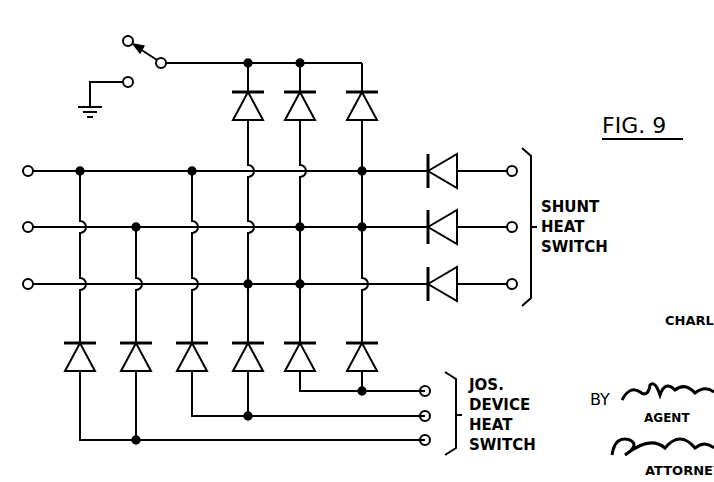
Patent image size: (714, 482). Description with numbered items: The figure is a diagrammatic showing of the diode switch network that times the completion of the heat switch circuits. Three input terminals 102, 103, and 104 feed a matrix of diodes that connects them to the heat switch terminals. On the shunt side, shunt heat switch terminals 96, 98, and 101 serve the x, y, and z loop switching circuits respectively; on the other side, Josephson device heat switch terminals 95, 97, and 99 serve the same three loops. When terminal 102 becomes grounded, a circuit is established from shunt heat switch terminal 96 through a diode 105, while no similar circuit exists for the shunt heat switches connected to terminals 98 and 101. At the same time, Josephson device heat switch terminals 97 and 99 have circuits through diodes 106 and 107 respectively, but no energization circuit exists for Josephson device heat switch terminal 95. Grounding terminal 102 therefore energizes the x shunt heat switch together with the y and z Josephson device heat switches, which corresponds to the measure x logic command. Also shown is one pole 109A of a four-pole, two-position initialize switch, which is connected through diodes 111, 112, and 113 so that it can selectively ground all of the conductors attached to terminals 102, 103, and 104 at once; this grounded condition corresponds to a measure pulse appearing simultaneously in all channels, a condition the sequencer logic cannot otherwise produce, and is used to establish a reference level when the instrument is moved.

The switch pole 109A is at (150, 44).
The diode 111 is at (241, 122).
The diode 112 is at (297, 122).
The diode 113 is at (356, 122).
The terminal 102 is at (29, 166).
The terminal 103 is at (30, 222).
The terminal 104 is at (30, 279).
The diode 105 is at (437, 158).
The diode 106 is at (73, 373).
The diode 107 is at (190, 373).
The shunt heat switch terminal 96 is at (511, 165).
The shunt heat switch terminal 98 is at (512, 221).
The shunt heat switch terminal 101 is at (512, 278).
The Josephson device heat switch terminal 95 is at (425, 385).
The Josephson device heat switch terminal 97 is at (431, 414).
The Josephson device heat switch terminal 99 is at (430, 444).